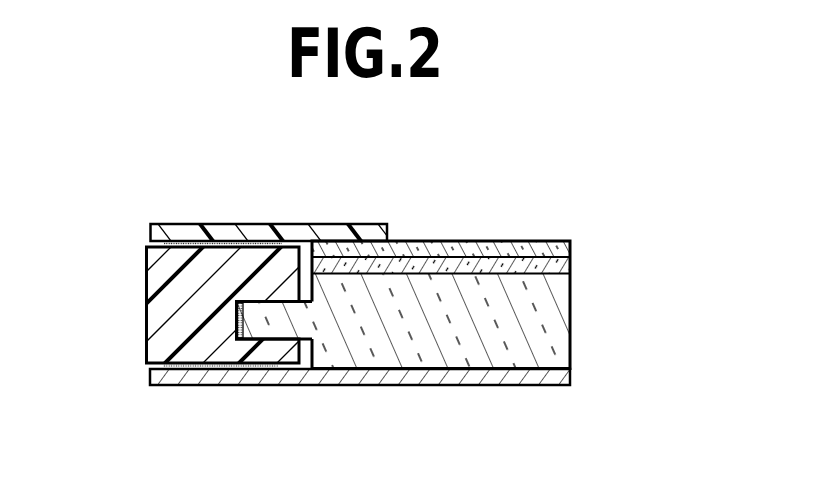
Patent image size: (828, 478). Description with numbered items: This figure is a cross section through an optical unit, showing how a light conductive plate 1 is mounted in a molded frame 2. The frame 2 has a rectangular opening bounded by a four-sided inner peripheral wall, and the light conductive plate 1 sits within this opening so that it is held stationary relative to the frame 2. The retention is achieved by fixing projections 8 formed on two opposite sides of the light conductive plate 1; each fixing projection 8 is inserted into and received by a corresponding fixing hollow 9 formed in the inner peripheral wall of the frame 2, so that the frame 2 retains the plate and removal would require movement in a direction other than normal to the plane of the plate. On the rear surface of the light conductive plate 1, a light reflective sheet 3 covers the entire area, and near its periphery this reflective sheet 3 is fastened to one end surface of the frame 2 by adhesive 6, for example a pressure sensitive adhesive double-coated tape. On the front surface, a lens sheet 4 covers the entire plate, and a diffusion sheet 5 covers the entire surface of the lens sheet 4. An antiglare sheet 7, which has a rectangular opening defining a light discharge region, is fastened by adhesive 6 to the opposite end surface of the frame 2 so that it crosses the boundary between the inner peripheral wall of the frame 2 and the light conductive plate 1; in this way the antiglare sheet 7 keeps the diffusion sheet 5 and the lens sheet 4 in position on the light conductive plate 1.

The light conductive plate 1 is at (557, 322).
The frame 2 is at (165, 272).
The light reflective sheet 3 is at (421, 377).
The lens sheet 4 is at (517, 262).
The diffusion sheet 5 is at (435, 248).
The adhesive 6 is at (265, 245).
The antiglare sheet 7 is at (368, 229).
The fixing projection 8 is at (275, 313).
The fixing hollow 9 is at (236, 324).